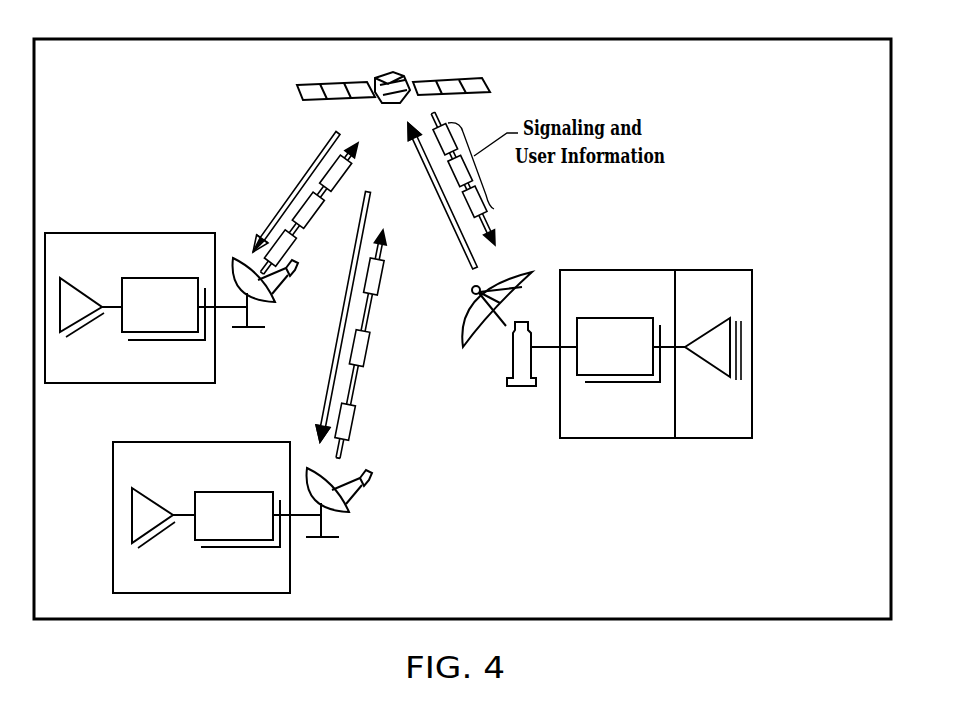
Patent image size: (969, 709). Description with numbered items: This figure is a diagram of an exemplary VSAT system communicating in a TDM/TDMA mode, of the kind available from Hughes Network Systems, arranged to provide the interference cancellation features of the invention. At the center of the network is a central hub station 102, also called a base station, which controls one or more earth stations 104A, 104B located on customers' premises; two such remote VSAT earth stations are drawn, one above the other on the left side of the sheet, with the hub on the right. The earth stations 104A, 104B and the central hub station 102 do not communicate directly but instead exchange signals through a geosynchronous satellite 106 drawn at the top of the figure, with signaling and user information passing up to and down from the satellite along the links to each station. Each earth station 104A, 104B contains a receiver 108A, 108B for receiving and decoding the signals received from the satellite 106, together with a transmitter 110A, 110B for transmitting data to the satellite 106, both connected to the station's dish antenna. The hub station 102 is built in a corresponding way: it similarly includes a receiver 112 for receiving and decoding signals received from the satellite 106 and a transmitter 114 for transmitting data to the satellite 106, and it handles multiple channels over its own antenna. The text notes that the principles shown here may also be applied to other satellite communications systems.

The central hub station 102 is at (722, 270).
The earth station 104A is at (62, 233).
The earth station 104B is at (132, 442).
The geosynchronous satellite 106 is at (297, 88).
The receiver 108A is at (63, 280).
The receiver 108B is at (138, 497).
The transmitter 110A is at (195, 319).
The transmitter 110B is at (256, 529).
The receiver 112 is at (718, 333).
The transmitter 114 is at (632, 359).